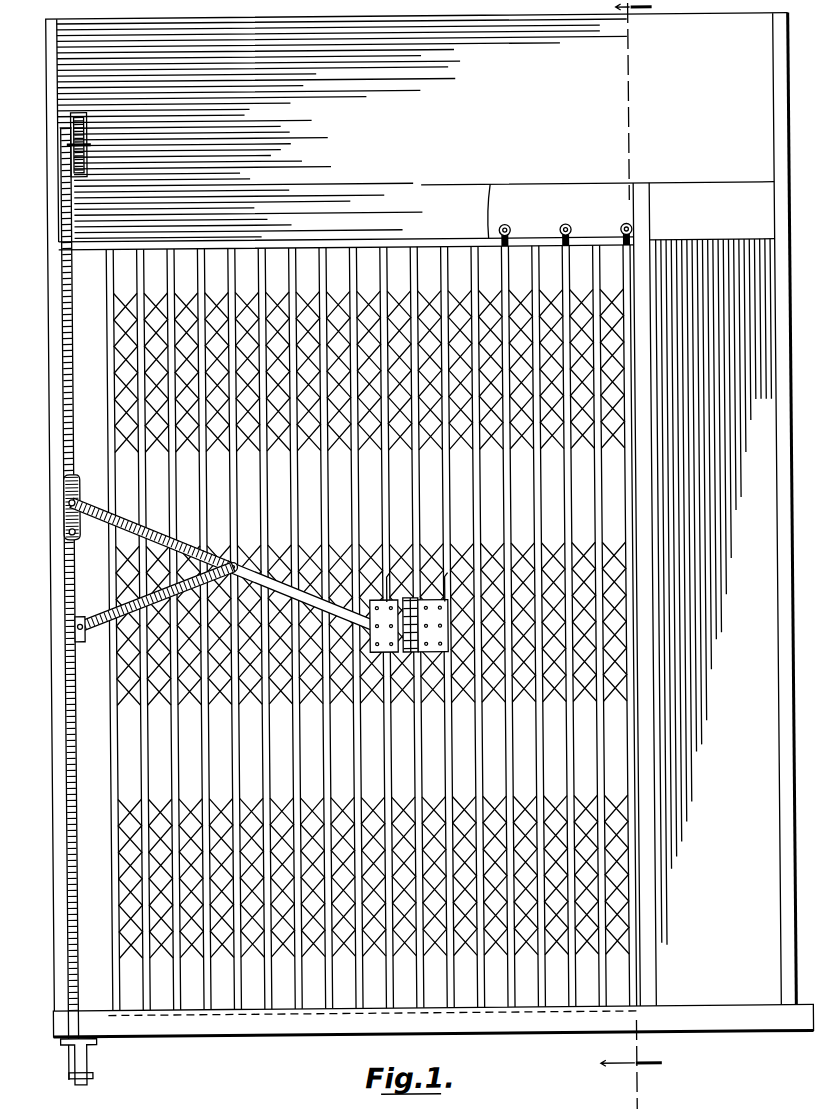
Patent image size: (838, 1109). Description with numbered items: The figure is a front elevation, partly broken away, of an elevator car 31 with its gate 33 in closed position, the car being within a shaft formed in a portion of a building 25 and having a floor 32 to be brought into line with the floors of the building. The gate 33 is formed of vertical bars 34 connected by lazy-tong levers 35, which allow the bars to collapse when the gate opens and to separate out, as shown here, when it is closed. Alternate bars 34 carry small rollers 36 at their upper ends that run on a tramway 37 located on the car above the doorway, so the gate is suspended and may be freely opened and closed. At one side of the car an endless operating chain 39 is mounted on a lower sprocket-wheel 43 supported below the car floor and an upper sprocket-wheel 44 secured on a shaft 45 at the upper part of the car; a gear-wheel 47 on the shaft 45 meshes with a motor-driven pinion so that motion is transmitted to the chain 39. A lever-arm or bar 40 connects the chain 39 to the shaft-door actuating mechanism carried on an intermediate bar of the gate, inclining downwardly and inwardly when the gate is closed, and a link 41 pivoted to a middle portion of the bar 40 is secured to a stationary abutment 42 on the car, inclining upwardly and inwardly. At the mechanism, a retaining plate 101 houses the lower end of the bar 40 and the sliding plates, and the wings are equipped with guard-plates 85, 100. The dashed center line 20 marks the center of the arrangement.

The center line of doorway 20 is at (627, 556).
The portion of a building 25 is at (434, 1047).
The elevator car 31 is at (661, 594).
The floor 32 is at (570, 1020).
The gate 33 is at (366, 250).
The vertical bars 34 is at (227, 997).
The lazy-tong levers 35 is at (127, 380).
The rollers 36 is at (564, 224).
The tramway 37 is at (482, 236).
The endless operating chain 39 is at (68, 280).
The lever-arm or bar 40 is at (196, 544).
The link 41 is at (95, 603).
The stationary abutment 42 is at (77, 631).
The lower sprocket-wheel 43 is at (76, 1070).
The upper sprocket-wheel 44 is at (61, 123).
The shaft 45 is at (62, 138).
The gear-wheel 47 is at (71, 113).
The guard-plate 85 is at (423, 653).
The shield or guard-plate 100 is at (388, 650).
The retaining plate 101 is at (367, 648).